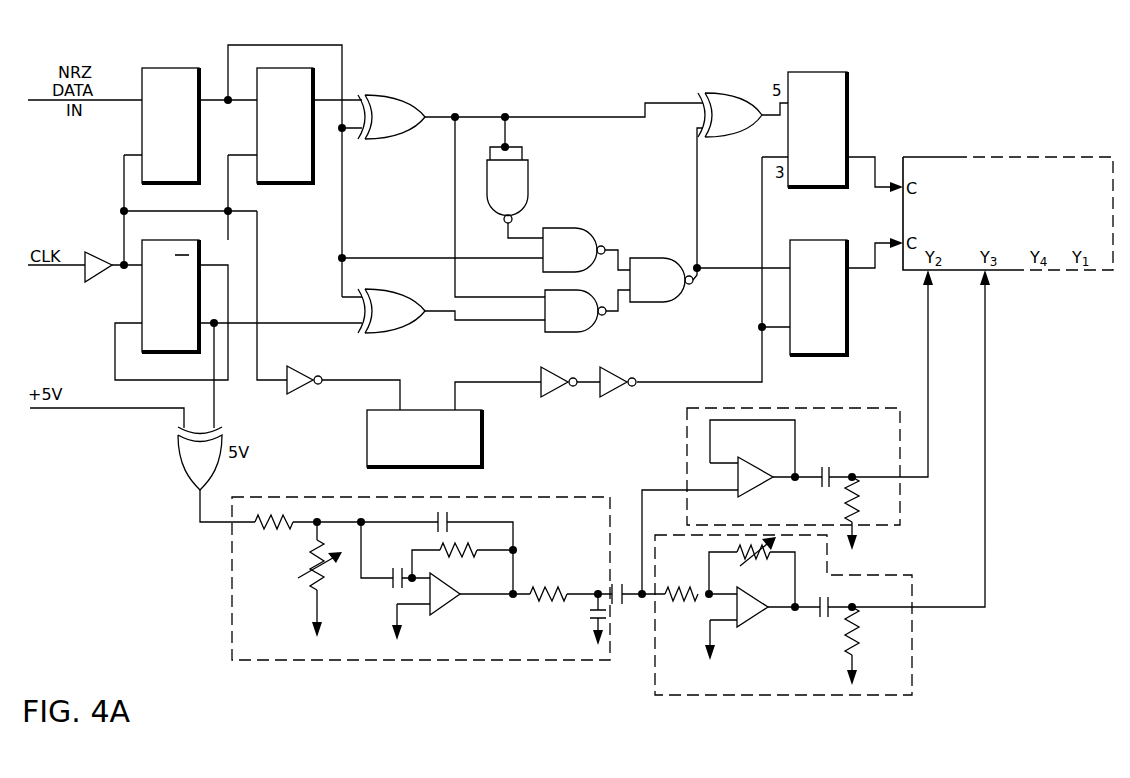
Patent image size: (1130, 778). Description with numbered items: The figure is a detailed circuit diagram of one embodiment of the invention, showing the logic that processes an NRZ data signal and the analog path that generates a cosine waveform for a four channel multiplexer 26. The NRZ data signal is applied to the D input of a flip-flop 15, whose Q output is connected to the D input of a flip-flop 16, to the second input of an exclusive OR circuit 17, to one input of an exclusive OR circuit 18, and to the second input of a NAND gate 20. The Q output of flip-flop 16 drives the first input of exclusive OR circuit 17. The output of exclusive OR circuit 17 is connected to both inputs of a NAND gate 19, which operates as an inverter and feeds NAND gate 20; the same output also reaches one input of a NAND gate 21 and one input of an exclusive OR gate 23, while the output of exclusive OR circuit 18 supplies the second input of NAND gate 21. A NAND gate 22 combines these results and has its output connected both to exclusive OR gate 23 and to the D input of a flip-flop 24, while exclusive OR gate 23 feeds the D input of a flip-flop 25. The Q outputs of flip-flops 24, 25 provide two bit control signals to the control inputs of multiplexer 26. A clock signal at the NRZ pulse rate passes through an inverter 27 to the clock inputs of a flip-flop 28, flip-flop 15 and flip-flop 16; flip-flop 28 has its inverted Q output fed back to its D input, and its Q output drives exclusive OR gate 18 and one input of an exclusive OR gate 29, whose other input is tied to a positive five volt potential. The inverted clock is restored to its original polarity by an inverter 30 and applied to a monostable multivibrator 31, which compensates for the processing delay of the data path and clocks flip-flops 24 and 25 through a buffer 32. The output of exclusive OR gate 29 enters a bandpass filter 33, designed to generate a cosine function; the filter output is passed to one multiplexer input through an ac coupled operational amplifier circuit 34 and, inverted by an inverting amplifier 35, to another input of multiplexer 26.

The flip-flop 15 is at (167, 72).
The flip-flop 16 is at (302, 70).
The exclusive OR circuit 17 is at (418, 101).
The exclusive OR circuit 18 is at (420, 306).
The NAND gate 19 is at (531, 183).
The NAND gate 20 is at (596, 232).
The NAND gate 21 is at (584, 333).
The NAND gate 22 is at (676, 301).
The exclusive OR gate 23 is at (738, 137).
The flip-flop 24 is at (834, 357).
The flip-flop 25 is at (823, 76).
The four channel multiplexer 26 is at (957, 146).
The inverter 27 is at (111, 275).
The flip-flop 28 is at (199, 252).
The exclusive OR gate 29 is at (178, 471).
The inverter 30 is at (313, 380).
The monostable multivibrator 31 is at (484, 441).
The buffer 32 is at (558, 395).
The bandpass filter 33 is at (310, 660).
The ac coupled operational amplifier circuit 34 is at (687, 450).
The inverting amplifier 35 is at (660, 695).